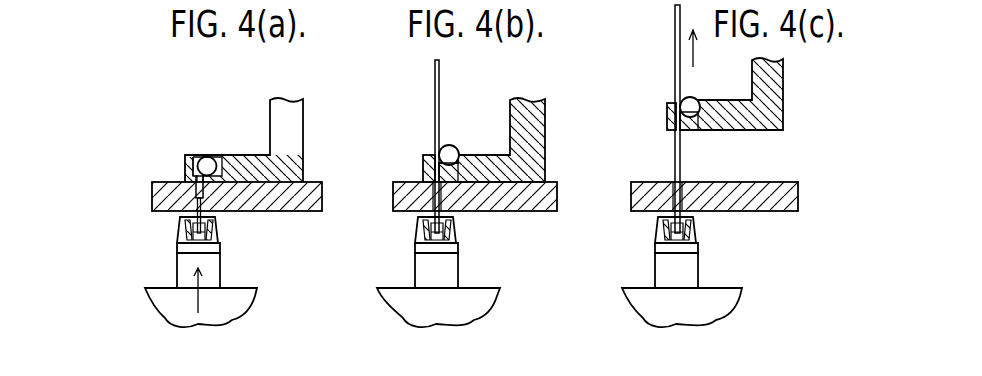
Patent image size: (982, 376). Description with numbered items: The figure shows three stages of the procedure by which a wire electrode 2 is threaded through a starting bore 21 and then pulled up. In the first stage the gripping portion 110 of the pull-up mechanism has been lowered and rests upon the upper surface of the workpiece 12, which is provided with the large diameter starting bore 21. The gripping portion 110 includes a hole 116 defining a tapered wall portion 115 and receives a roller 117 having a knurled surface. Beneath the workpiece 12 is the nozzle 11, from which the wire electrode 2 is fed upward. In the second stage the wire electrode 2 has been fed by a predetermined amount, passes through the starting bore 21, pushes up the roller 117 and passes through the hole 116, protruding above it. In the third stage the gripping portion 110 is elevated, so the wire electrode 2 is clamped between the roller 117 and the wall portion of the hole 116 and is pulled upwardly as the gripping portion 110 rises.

In FIG. 4A, the wire electrode 2 is at (196, 212).
In FIG. 4B, the wire electrode 2 is at (434, 93).
In FIG. 4C, the wire electrode 2 is at (675, 66).
In FIG. 4A, the nozzle 11 is at (222, 272).
In FIG. 4B, the nozzle 11 is at (458, 268).
In FIG. 4C, the nozzle 11 is at (698, 267).
In FIG. 4A, the workpiece 12 is at (292, 205).
In FIG. 4B, the workpiece 12 is at (530, 208).
In FIG. 4C, the workpiece 12 is at (763, 207).
In FIG. 4A, the starting bore 21 is at (195, 185).
In FIG. 4B, the starting bore 21 is at (442, 197).
In FIG. 4C, the starting bore 21 is at (683, 208).
In FIG. 4A, the gripping portion 110 is at (252, 170).
In FIG. 4C, the gripping portion 110 is at (748, 130).
In FIG. 4A, the tapered wall portion 115 is at (255, 178).
In FIG. 4A, the hole 116 is at (192, 168).
In FIG. 4B, the hole 116 is at (456, 172).
In FIG. 4C, the hole 116 is at (688, 128).
In FIG. 4A, the roller 117 is at (207, 157).
In FIG. 4B, the roller 117 is at (452, 146).
In FIG. 4C, the roller 117 is at (698, 101).